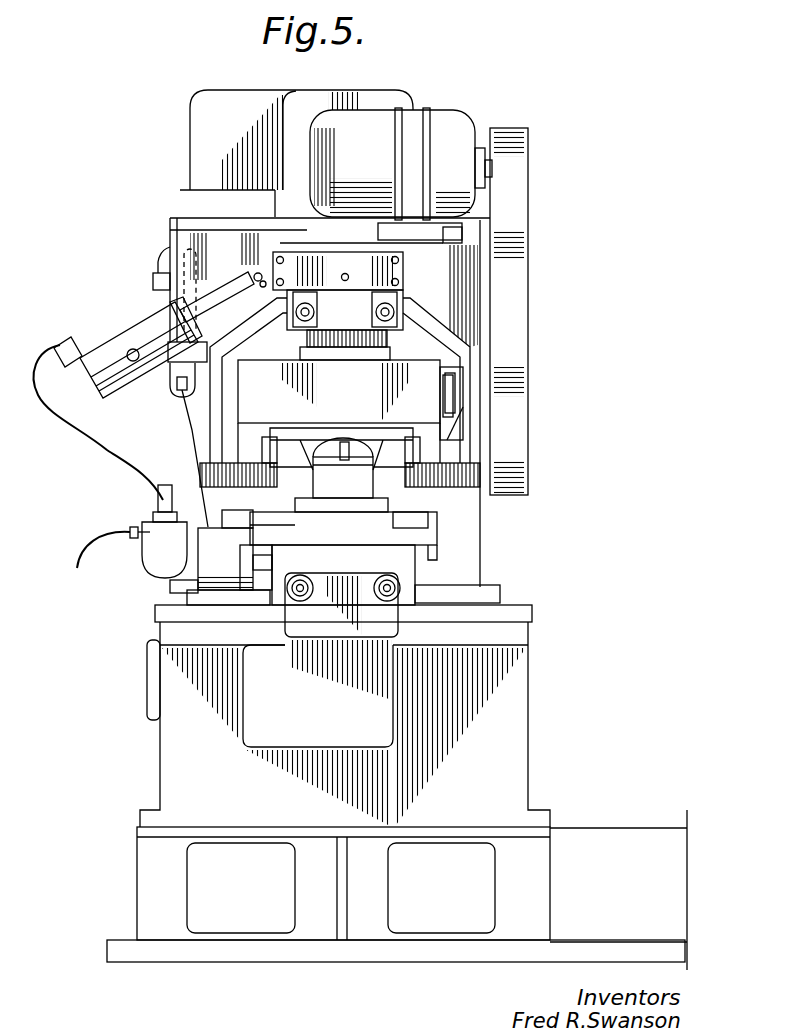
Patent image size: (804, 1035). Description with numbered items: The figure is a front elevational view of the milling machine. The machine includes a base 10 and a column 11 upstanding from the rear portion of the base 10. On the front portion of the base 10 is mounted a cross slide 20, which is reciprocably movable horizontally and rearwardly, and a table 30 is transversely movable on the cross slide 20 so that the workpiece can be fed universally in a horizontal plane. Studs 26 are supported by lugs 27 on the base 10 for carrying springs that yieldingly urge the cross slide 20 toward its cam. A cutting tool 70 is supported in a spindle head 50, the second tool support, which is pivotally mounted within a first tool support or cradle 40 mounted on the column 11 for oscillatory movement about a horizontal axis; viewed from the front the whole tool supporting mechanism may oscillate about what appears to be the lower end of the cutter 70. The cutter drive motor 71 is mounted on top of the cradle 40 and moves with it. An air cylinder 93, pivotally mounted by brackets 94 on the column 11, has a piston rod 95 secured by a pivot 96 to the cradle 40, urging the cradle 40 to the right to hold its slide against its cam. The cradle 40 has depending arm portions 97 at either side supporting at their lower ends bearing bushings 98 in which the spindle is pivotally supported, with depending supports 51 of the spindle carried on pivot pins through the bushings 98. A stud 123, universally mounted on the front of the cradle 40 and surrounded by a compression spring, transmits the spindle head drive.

The base 10 is at (516, 715).
The column 11 is at (468, 520).
The cross slide 20 is at (403, 568).
The studs 26 is at (298, 600).
The lugs 27 is at (297, 622).
The table 30 is at (427, 535).
The cradle 40 is at (463, 343).
The spindle head 50 is at (386, 399).
The depending supports 51 is at (248, 484).
The cutting tool 70 is at (348, 453).
The cutter drive motor 71 is at (456, 122).
The air cylinder 93 is at (98, 348).
The brackets 94 is at (152, 332).
The piston rod 95 is at (222, 275).
The pivot 96 is at (256, 273).
The depending arm portions 97 is at (460, 412).
The bearing bushings 98 is at (203, 473).
The stud 123 is at (408, 325).